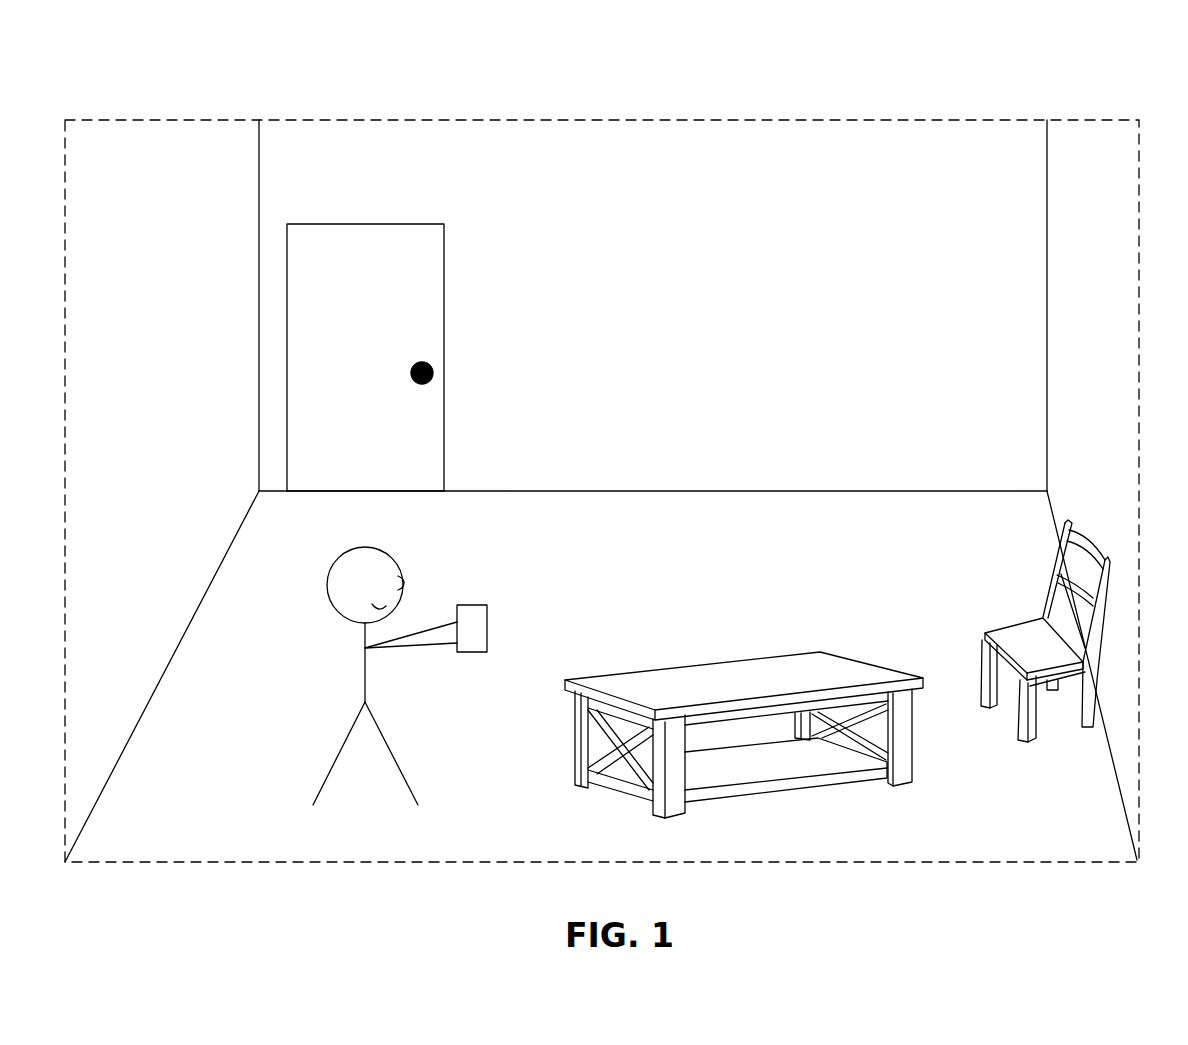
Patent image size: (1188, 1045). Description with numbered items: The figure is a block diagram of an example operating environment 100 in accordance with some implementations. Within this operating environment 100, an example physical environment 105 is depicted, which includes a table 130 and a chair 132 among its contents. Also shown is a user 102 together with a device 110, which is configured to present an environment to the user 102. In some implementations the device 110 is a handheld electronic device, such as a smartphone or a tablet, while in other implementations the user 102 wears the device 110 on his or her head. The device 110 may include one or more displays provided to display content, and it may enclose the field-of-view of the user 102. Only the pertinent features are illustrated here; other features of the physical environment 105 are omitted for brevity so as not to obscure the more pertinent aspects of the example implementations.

The operating environment 100 is at (166, 48).
The physical environment 105 is at (155, 166).
The user 102 is at (365, 673).
The device 110 is at (490, 627).
The table 130 is at (827, 678).
The chair 132 is at (1077, 538).